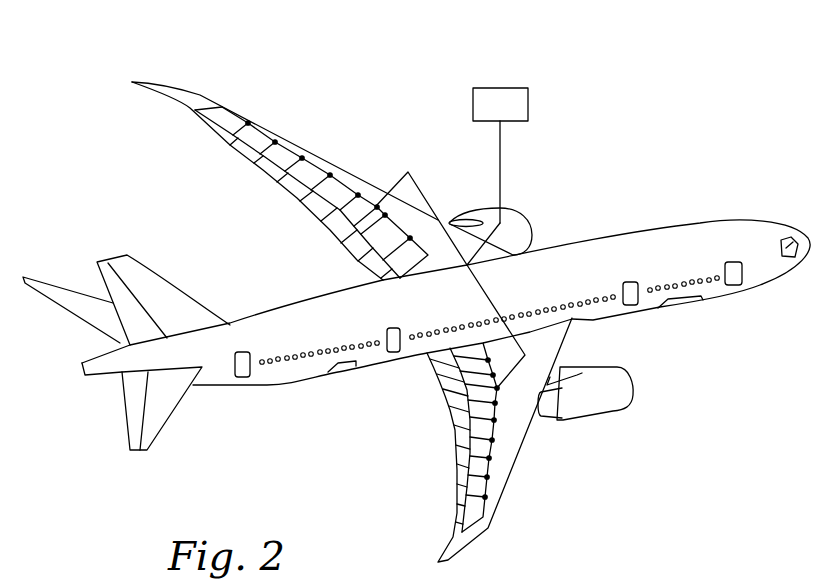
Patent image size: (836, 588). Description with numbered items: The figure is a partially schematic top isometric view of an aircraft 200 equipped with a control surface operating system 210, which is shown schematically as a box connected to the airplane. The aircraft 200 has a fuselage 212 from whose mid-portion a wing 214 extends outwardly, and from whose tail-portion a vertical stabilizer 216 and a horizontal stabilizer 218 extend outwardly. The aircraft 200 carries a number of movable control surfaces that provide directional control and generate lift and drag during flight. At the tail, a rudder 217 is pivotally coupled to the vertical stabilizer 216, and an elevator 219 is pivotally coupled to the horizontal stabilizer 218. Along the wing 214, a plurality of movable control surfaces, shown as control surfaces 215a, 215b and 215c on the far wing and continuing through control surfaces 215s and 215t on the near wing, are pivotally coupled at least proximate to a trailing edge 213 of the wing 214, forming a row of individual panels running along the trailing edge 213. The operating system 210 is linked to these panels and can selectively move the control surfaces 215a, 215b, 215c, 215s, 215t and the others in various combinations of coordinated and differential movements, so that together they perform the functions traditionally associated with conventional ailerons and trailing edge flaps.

The aircraft 200 is at (726, 100).
The control surface operating system 210 is at (508, 87).
The fuselage 212 is at (693, 222).
The trailing edge 213 is at (270, 175).
The wing 214 is at (340, 163).
The control surface 215a is at (192, 108).
The control surface 215b is at (227, 130).
The control surface 215c is at (250, 150).
The control surface 215s is at (458, 500).
The control surface 215t is at (455, 522).
The vertical stabilizer 216 is at (148, 267).
The rudder 217 is at (97, 273).
The horizontal stabilizer 218 is at (170, 418).
The elevator 219 is at (128, 410).